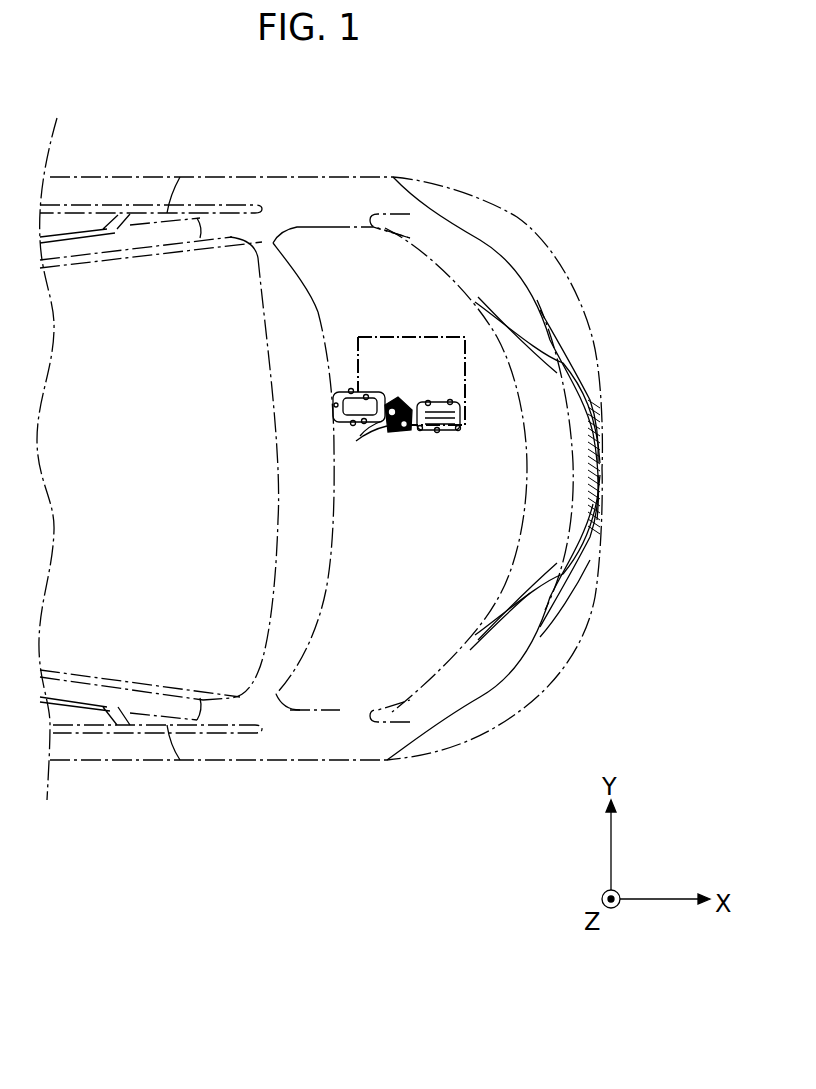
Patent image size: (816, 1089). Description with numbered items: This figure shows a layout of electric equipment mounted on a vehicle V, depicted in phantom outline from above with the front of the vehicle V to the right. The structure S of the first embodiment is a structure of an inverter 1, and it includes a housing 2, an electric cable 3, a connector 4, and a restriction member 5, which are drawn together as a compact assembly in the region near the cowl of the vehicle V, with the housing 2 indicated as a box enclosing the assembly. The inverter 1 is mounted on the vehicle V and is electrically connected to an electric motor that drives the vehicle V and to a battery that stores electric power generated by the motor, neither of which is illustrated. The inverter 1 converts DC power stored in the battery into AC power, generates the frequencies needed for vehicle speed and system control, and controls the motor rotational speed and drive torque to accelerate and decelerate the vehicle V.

The inverter 1 is at (388, 337).
The housing 2 is at (427, 337).
The electric cable 3 is at (378, 432).
The connector 4 is at (400, 395).
The restriction member 5 is at (409, 431).
The vehicle V is at (270, 178).
The structure S is at (470, 310).